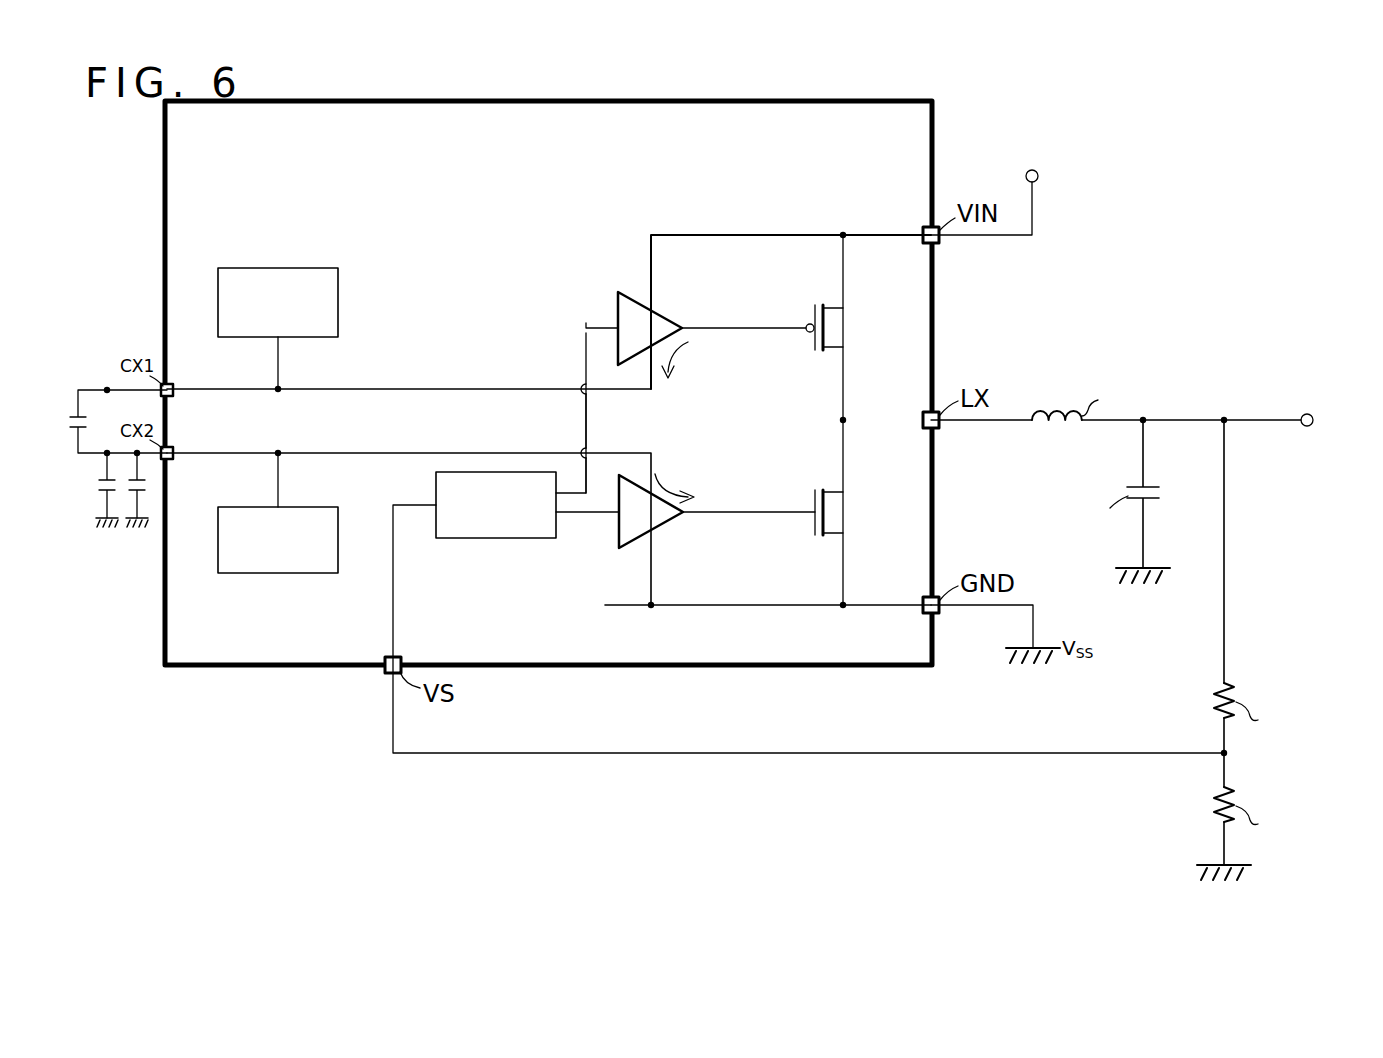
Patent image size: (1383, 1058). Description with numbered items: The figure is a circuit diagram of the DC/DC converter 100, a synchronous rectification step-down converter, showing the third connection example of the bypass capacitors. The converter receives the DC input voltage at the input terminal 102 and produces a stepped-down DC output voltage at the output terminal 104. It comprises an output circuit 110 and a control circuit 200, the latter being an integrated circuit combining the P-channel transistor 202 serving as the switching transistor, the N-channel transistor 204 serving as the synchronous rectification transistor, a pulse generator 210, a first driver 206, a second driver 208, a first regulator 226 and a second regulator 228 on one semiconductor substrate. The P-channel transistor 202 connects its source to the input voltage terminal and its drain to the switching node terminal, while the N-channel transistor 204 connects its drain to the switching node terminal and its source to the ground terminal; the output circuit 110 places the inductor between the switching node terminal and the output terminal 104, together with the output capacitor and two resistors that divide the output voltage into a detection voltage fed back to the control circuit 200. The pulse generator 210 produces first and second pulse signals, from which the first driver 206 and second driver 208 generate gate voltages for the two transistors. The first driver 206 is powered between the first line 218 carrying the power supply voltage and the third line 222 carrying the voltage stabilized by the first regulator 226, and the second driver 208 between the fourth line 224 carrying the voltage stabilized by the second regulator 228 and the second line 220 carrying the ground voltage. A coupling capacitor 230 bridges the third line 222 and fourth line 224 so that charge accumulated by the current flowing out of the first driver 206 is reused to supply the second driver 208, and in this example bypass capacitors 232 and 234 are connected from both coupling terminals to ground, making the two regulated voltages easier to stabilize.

The DC/DC converter 100 is at (570, 913).
The input terminal 102 is at (1038, 172).
The output terminal 104 is at (1313, 424).
The output circuit 110 is at (1258, 890).
The control circuit 200 is at (280, 668).
The P-channel transistor 202 is at (848, 312).
The N-channel transistor 204 is at (848, 498).
The first driver 206 is at (655, 310).
The second driver 208 is at (655, 528).
The pulse generator 210 is at (497, 538).
The first line 218 is at (748, 233).
The second line 220 is at (750, 603).
The third line 222 is at (436, 389).
The fourth line 224 is at (436, 453).
The first regulator 226 is at (280, 268).
The second regulator 228 is at (278, 573).
The coupling capacitor 230 is at (66, 424).
The bypass capacitor 232 is at (96, 487).
The bypass capacitor 234 is at (122, 494).